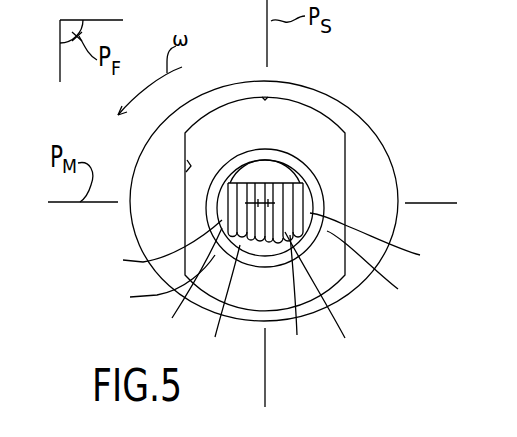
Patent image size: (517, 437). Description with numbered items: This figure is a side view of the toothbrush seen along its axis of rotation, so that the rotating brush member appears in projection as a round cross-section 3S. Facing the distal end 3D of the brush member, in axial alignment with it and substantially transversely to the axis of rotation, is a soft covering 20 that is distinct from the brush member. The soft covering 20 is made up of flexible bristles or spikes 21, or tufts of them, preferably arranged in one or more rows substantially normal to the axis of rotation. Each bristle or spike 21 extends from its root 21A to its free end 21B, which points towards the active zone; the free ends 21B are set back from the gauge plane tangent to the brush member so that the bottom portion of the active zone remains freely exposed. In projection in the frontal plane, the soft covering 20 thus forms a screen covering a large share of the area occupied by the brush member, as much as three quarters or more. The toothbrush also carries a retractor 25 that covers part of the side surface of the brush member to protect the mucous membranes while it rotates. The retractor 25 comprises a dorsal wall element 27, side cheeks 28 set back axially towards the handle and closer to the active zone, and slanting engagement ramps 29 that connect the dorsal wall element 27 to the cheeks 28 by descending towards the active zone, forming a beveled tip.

The soft covering 20 is at (302, 203).
The distal end 3D is at (305, 170).
The bristles or spikes 21 is at (300, 203).
The cross-section 3S is at (268, 172).
The free ends 21B is at (288, 172).
The side cheeks 28 is at (271, 243).
The engagement ramps 29 is at (266, 270).
The roots 21A is at (233, 297).
The dorsal wall element 27 is at (219, 305).
The retractor 25 is at (326, 299).